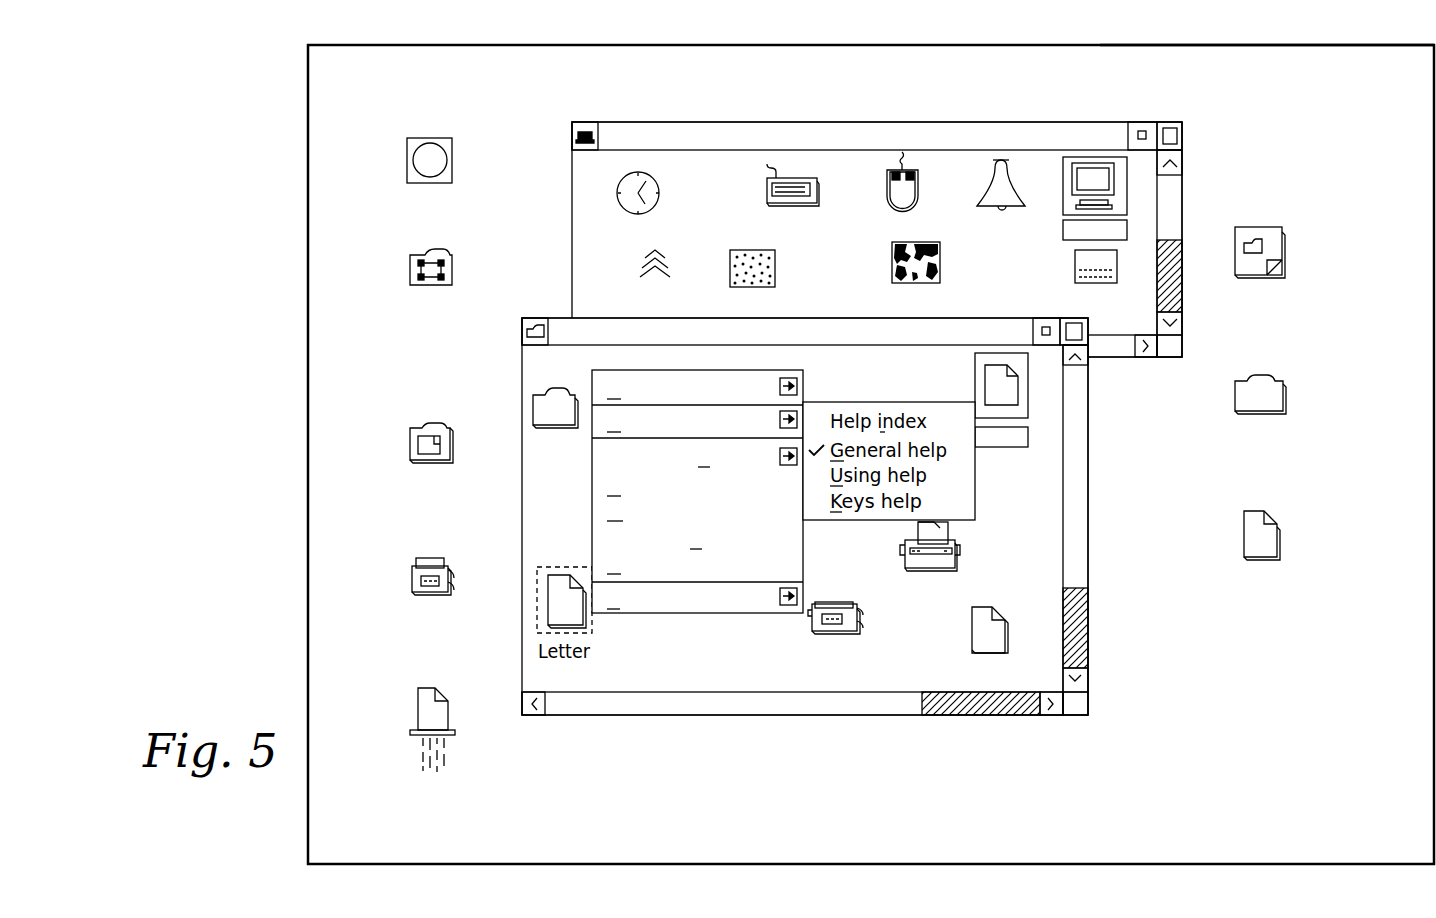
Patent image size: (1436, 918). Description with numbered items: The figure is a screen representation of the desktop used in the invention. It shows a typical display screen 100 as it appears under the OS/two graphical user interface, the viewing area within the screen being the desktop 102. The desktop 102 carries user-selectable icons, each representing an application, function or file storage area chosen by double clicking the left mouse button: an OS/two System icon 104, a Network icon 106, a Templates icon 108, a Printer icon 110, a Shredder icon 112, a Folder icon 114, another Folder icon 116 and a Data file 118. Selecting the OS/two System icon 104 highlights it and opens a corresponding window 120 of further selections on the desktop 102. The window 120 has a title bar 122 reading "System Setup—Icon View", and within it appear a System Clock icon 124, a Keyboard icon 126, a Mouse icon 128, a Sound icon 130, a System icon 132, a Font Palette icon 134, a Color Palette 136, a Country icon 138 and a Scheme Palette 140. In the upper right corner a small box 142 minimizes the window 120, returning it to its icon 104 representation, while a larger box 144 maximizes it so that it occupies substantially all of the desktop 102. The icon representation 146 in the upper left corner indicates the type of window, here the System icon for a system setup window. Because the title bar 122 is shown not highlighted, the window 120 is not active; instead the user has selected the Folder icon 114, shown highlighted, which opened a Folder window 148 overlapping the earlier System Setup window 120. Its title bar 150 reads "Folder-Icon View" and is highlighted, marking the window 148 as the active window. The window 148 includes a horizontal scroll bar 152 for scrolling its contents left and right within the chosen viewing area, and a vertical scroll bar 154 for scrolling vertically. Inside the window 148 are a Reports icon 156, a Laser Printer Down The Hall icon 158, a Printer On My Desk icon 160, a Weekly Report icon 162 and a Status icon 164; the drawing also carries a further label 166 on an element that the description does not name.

The display screen 100 is at (408, 46).
The desktop 102 is at (1330, 57).
The OS/2 System icon 104 is at (407, 150).
The Network icon 106 is at (410, 274).
The Templates icon 108 is at (410, 440).
The Printer icon 110 is at (412, 580).
The Shredder icon 112 is at (418, 700).
The Folder icon 114 is at (1285, 253).
The Folder icon 116 is at (1286, 396).
The Data file 118 is at (1280, 529).
The window 120 is at (677, 122).
The title bar 122 is at (932, 122).
The System Clock icon 124 is at (660, 191).
The Keyboard icon 126 is at (817, 190).
The Mouse icon 128 is at (920, 182).
The Sound icon 130 is at (1014, 173).
The System icon 132 is at (1128, 183).
The Font Palette icon 134 is at (605, 278).
The Color Palette 136 is at (775, 264).
The Country icon 138 is at (892, 258).
The Scheme Palette 140 is at (1075, 262).
The small box 142 is at (1141, 122).
The box 144 is at (1170, 122).
The icon representation 146 is at (572, 140).
The Folder window 148 is at (522, 545).
The title bar 150 is at (815, 348).
The horizontal scroll bar 152 is at (814, 705).
The vertical scroll bar 154 is at (1088, 527).
The Reports icon 156 is at (528, 406).
The Laser Printer Down The Hall icon 158 is at (866, 612).
The Printer On My Desk icon 160 is at (962, 556).
The Weekly Report icon 162 is at (1010, 604).
The Status icon 164 is at (974, 381).
The cascade menu arrow 166 is at (800, 388).